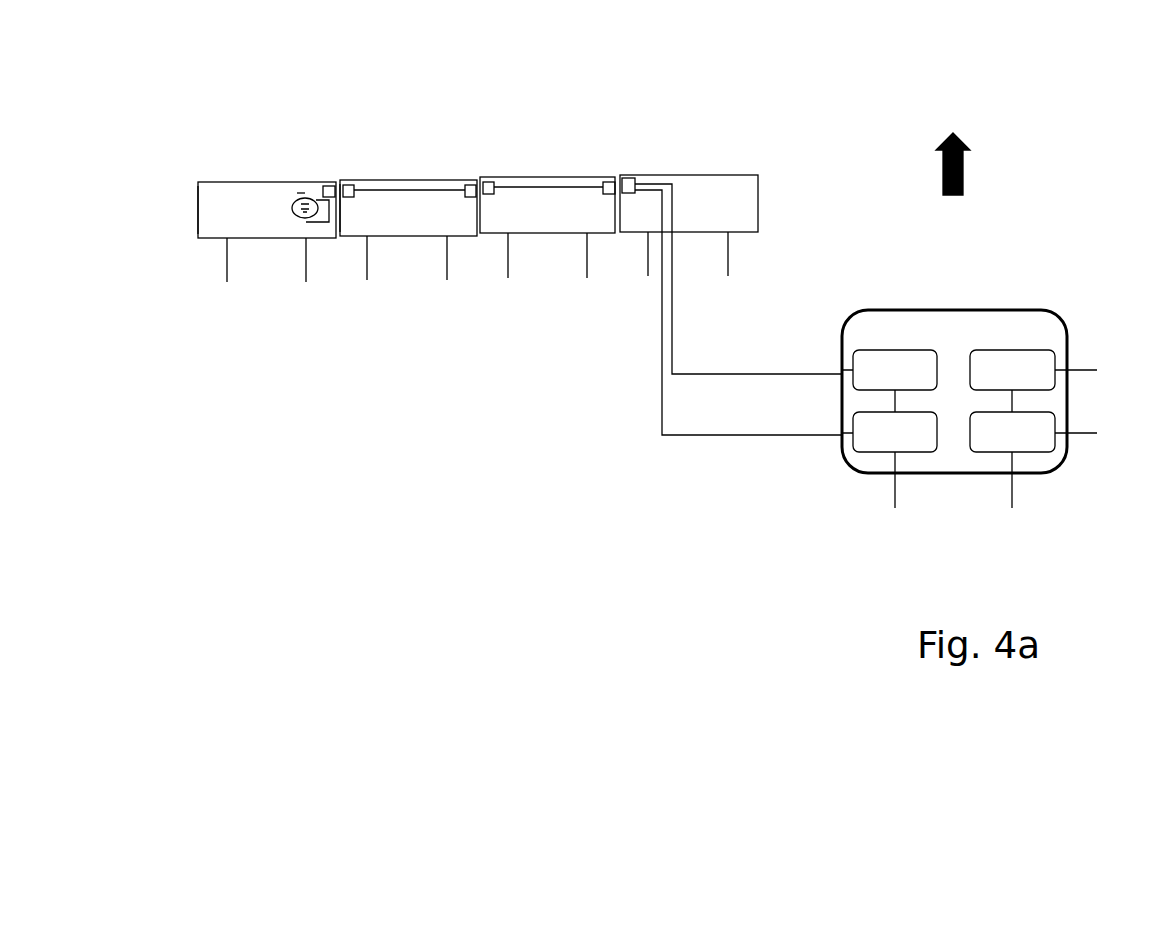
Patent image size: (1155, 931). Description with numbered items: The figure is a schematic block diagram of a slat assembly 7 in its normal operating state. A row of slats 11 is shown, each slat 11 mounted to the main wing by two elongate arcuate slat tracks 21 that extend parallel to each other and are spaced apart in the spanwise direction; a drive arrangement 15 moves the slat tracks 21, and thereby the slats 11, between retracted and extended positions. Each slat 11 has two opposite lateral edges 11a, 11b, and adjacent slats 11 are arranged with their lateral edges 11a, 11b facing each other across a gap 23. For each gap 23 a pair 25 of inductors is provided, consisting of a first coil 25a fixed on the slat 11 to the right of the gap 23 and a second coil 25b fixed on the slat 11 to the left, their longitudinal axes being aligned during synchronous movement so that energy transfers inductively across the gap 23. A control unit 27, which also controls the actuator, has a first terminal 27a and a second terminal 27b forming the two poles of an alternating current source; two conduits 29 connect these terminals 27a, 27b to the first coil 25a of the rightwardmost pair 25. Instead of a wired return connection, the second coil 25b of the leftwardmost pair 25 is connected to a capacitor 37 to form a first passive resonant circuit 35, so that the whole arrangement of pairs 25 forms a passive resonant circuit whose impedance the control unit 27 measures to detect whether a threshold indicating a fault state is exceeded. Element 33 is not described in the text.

The slat assembly 7 is at (248, 108).
The slat 11 is at (232, 190).
The lateral edge 11a is at (198, 212).
The lateral edge 11b is at (347, 225).
The drive arrangement 15 is at (180, 242).
The slat track 21 is at (225, 262).
The gap 23 is at (338, 184).
The pair of inductors 25 is at (625, 140).
The first inductor 25a is at (632, 178).
The second inductor 25b is at (606, 178).
The control unit 27 is at (985, 322).
The first terminal 27a is at (888, 365).
The second terminal 27b is at (905, 445).
The conduit 29 is at (712, 372).
The module connector 33 is at (371, 185).
The first passive resonant circuit 35 is at (294, 192).
The capacitor 37 is at (291, 207).